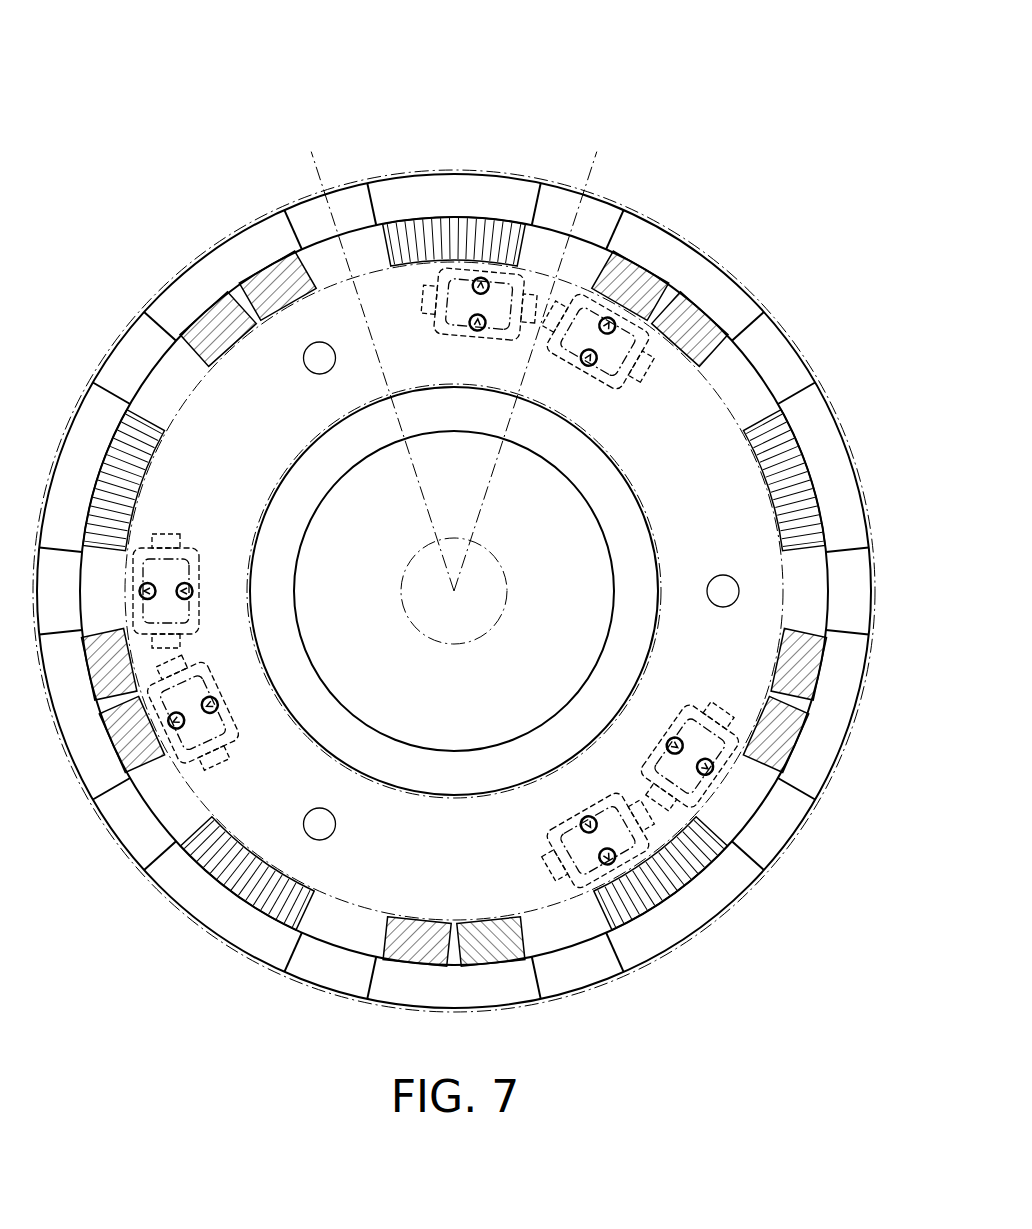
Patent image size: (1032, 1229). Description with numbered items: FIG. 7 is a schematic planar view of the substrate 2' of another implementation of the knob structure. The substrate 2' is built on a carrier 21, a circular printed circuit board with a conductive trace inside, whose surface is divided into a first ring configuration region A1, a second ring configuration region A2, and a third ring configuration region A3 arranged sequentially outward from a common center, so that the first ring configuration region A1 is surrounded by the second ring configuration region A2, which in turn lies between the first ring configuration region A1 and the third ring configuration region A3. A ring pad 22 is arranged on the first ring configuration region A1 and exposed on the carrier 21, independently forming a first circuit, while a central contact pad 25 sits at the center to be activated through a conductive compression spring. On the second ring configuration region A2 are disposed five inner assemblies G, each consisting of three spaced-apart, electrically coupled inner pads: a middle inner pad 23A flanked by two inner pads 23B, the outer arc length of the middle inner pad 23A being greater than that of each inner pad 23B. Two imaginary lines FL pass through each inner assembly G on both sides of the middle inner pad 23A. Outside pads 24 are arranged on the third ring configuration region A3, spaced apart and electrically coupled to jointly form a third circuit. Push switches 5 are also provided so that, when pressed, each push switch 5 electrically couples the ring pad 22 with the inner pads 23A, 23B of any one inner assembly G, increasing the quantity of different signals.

The substrate 2' is at (454, 591).
The carrier 21 is at (215, 412).
The ring pad 22 is at (404, 763).
The middle inner pad 23A is at (452, 235).
The inner pad 23B is at (278, 268).
The outside pad 24 is at (592, 220).
The central contact pad 25 is at (470, 607).
The push switch 5 is at (446, 333).
The first ring configuration region A1 is at (660, 531).
The second ring configuration region A2 is at (262, 908).
The third ring configuration region A3 is at (684, 942).
The imaginary line FL is at (318, 158).
The inner assembly G is at (905, 200).